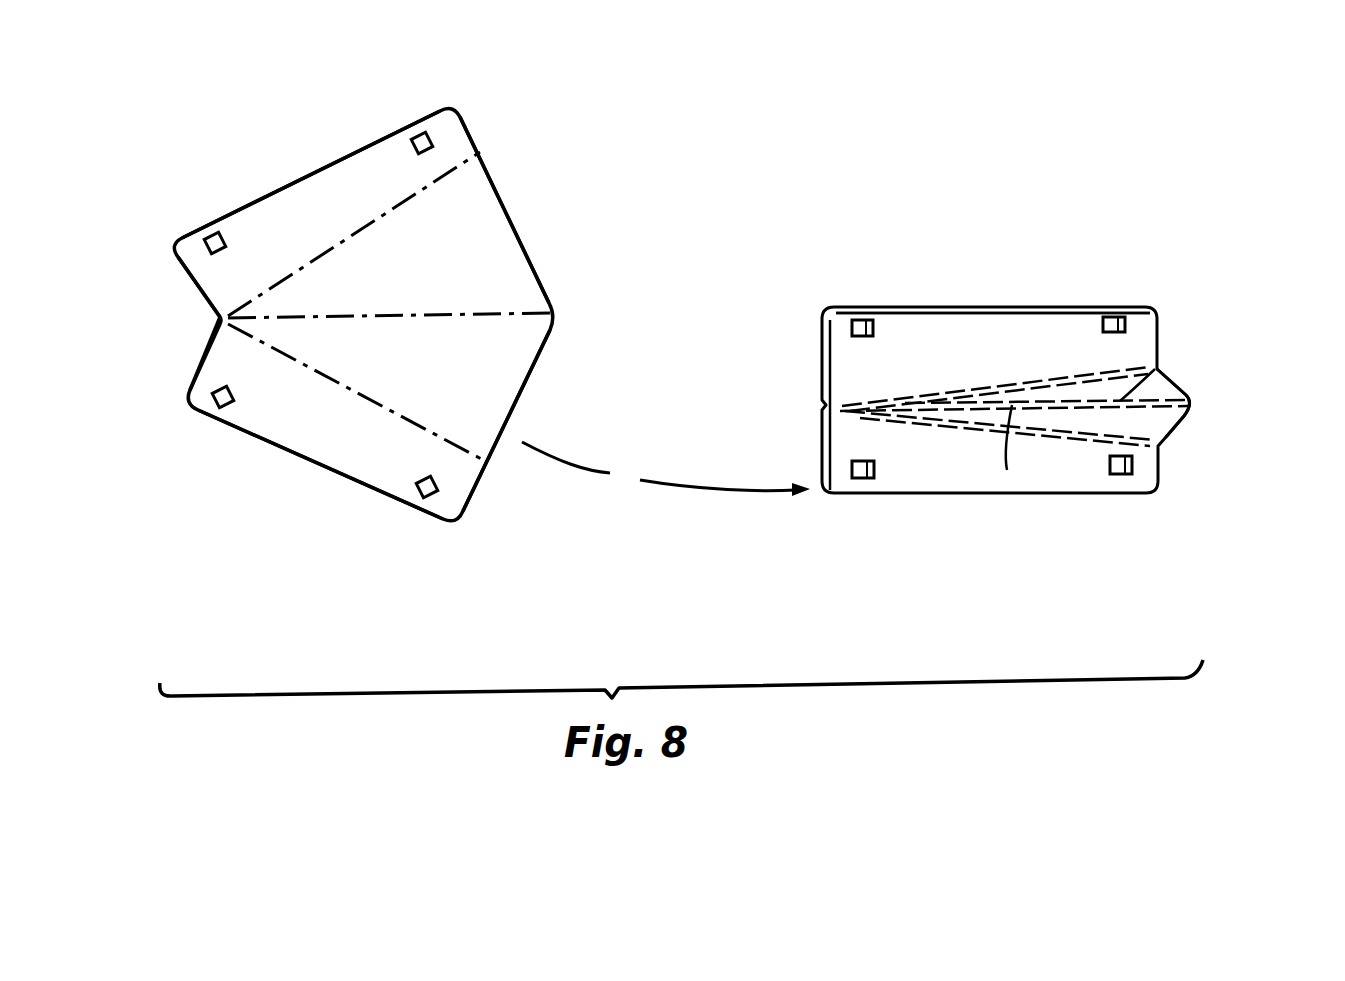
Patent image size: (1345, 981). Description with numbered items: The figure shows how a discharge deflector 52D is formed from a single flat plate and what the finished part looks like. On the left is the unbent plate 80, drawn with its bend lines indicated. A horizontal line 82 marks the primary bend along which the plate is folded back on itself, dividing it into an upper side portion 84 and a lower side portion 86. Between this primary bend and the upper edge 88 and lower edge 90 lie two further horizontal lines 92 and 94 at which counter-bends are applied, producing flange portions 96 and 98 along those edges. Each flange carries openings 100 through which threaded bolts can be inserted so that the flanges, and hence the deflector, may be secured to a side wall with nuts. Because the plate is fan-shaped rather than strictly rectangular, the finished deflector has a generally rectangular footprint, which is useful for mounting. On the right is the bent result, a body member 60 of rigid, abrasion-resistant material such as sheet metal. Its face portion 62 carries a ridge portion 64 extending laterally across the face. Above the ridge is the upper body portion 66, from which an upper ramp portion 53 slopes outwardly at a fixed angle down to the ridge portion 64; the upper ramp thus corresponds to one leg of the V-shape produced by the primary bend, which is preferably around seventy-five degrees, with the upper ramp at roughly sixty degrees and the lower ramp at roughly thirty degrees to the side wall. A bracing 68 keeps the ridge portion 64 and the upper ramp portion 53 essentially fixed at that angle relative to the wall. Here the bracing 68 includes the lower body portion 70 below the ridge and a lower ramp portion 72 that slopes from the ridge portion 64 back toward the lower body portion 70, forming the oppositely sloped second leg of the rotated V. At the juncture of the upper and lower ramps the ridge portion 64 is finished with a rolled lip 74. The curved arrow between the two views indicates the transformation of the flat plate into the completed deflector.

The rectangular plate 80 is at (529, 172).
The horizontal line 82 is at (483, 312).
The upper side portion 84 is at (500, 238).
The lower side portion 86 is at (497, 367).
The upper edge 88 is at (257, 200).
The lower edge 90 is at (290, 455).
The horizontal line 92 is at (290, 275).
The horizontal line 94 is at (262, 343).
The flange portion 96 is at (340, 190).
The flange portion 98 is at (338, 440).
The openings 100 is at (213, 237).
The body member 60 is at (810, 341).
The face portion 62 is at (890, 372).
The ridge portion 64 is at (1155, 369).
The upper body portion 66 is at (920, 330).
The lower body portion 70 is at (918, 468).
The lower ramp portion 72 is at (1175, 424).
The rolled lip 74 is at (1007, 470).
The upper ramp portion 53 is at (1180, 383).
The bracing 68 is at (1176, 450).
The discharge deflector 52D is at (1035, 296).